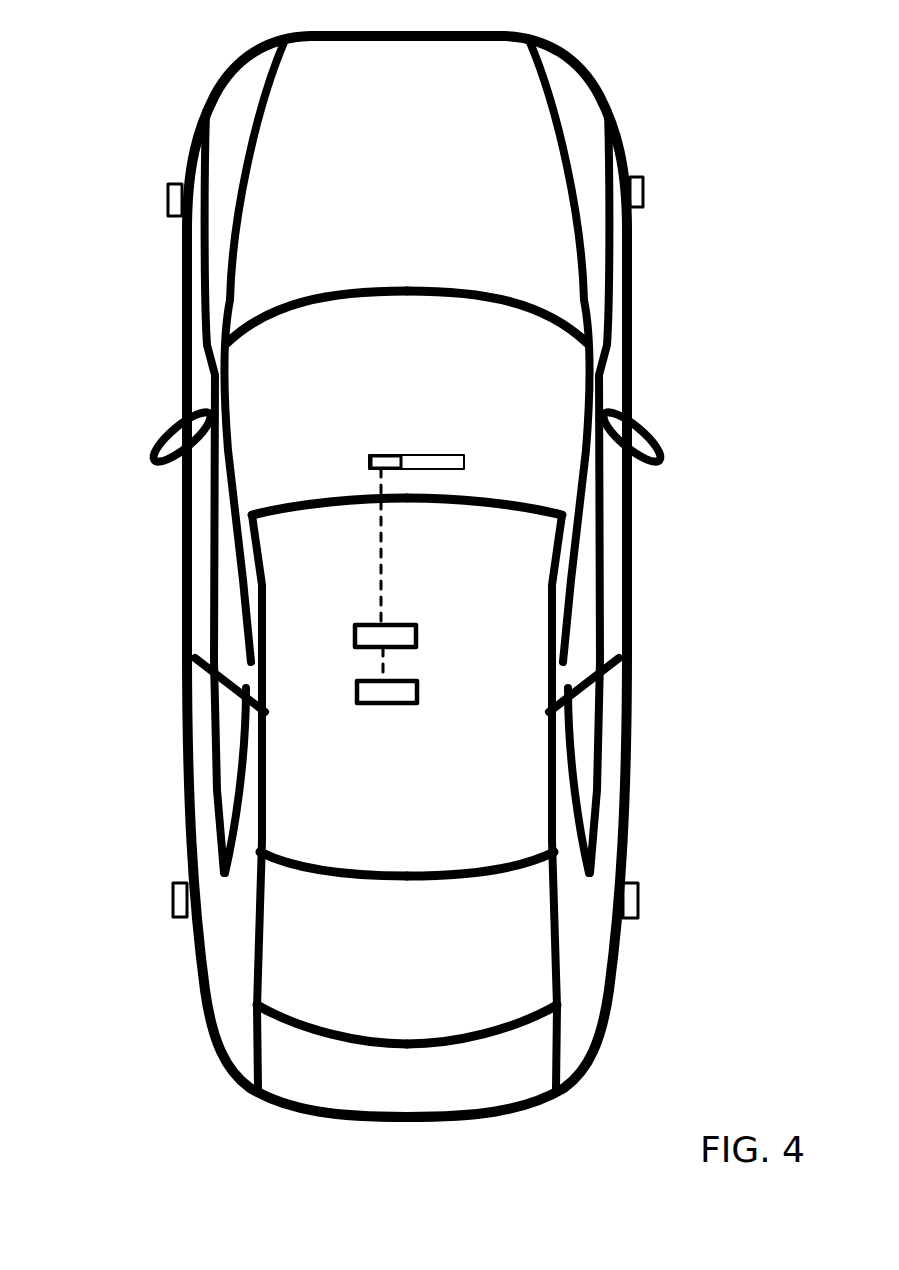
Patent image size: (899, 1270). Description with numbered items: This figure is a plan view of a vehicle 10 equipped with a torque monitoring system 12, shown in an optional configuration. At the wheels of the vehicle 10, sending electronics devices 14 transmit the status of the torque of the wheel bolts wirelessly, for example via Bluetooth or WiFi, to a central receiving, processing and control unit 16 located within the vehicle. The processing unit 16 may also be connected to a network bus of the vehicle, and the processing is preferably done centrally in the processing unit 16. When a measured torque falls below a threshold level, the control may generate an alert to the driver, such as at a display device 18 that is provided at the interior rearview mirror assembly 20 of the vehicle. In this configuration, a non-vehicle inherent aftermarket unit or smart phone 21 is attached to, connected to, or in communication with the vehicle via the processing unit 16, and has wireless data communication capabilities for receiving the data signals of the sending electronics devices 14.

The vehicle 10 is at (124, 47).
The torque monitoring system 12 is at (702, 91).
The sending electronics device 14 is at (167, 205).
The central receiving, processing and control unit 16 is at (400, 630).
The display device 18 is at (387, 455).
The interior rearview mirror assembly 20 is at (465, 455).
The non-vehicle inherent aftermarket unit or smart phone 21 is at (402, 687).